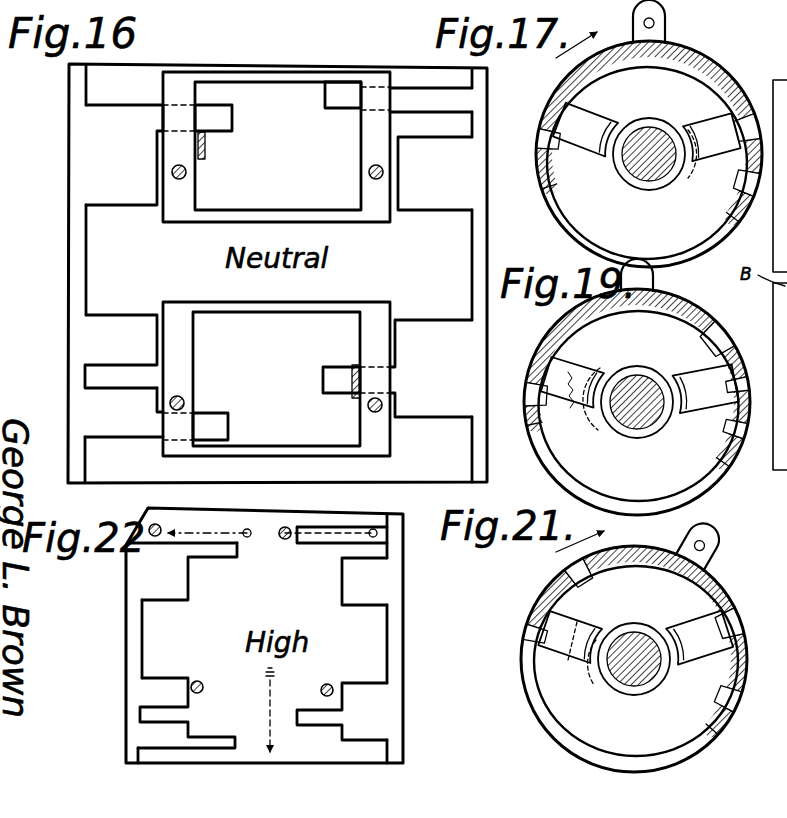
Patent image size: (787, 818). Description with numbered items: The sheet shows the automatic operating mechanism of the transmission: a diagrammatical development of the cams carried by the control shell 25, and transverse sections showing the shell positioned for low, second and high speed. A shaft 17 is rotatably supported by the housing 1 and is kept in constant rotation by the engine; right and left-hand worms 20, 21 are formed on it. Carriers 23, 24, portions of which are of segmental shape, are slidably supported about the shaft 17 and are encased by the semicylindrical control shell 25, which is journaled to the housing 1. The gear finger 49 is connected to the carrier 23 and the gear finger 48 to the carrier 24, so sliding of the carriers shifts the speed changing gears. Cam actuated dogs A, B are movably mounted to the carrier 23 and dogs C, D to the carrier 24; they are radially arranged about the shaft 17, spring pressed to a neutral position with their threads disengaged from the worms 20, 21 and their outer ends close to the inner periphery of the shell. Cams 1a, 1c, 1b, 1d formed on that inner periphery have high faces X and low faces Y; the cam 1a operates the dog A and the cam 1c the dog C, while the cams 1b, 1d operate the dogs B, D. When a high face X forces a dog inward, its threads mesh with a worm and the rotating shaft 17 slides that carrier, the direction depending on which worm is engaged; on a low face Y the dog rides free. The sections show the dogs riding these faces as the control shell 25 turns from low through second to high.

In FIG. 19, the housing 1 is at (620, 431).
In FIG. 16, the cam 1a is at (441, 309).
In FIG. 22, the cam 1a is at (370, 712).
In FIG. 17, the cam 1a is at (756, 110).
In FIG. 19, the cam 1a is at (544, 300).
In FIG. 21, the cam 1a is at (748, 641).
In FIG. 16, the cam 1b is at (117, 420).
In FIG. 22, the cam 1b is at (110, 694).
In FIG. 17, the cam 1b is at (735, 206).
In FIG. 19, the cam 1b is at (731, 456).
In FIG. 21, the cam 1b is at (727, 723).
In FIG. 16, the cam 1c is at (453, 183).
In FIG. 22, the cam 1c is at (378, 576).
In FIG. 17, the cam 1c is at (547, 178).
In FIG. 19, the cam 1c is at (531, 409).
In FIG. 21, the cam 1c is at (540, 625).
In FIG. 16, the cam 1d is at (113, 193).
In FIG. 22, the cam 1d is at (112, 576).
In FIG. 17, the cam 1d is at (541, 141).
In FIG. 21, the cam 1d is at (561, 596).
In FIG. 17, the shaft 17 is at (648, 178).
In FIG. 21, the shaft 17 is at (636, 650).
In FIG. 17, the right-hand worm 20 is at (668, 186).
In FIG. 21, the right-hand worm 20 is at (627, 689).
In FIG. 19, the left-hand worm 21 is at (647, 433).
In FIG. 16, the carrier 23 is at (193, 327).
In FIG. 16, the carrier 24 is at (372, 156).
In FIG. 16, the control shell 25 is at (482, 216).
In FIG. 22, the control shell 25 is at (400, 645).
In FIG. 17, the control shell 25 is at (712, 72).
In FIG. 19, the control shell 25 is at (713, 323).
In FIG. 21, the control shell 25 is at (648, 557).
In FIG. 16, the gear finger 48 is at (356, 378).
In FIG. 16, the gear finger 49 is at (206, 158).
In FIG. 16, the cam actuated dog A is at (380, 408).
In FIG. 22, the cam actuated dog A is at (327, 690).
In FIG. 17, the cam actuated dog A is at (676, 168).
In FIG. 19, the cam actuated dog A is at (698, 402).
In FIG. 21, the cam actuated dog A is at (693, 645).
In FIG. 16, the cam actuated dog B is at (186, 403).
In FIG. 22, the cam actuated dog B is at (197, 687).
In FIG. 17, the cam actuated dog B is at (690, 126).
In FIG. 19, the cam actuated dog B is at (659, 372).
In FIG. 16, the cam actuated dog C is at (370, 176).
In FIG. 22, the cam actuated dog C is at (286, 527).
In FIG. 17, the cam actuated dog C is at (594, 125).
In FIG. 19, the cam actuated dog C is at (583, 396).
In FIG. 21, the cam actuated dog C is at (607, 633).
In FIG. 16, the cam actuated dog D is at (214, 146).
In FIG. 22, the cam actuated dog D is at (165, 525).
In FIG. 19, the cam actuated dog D is at (568, 373).
In FIG. 21, the cam actuated dog D is at (580, 642).
In FIG. 16, the high face X is at (133, 162).
In FIG. 22, the high face X is at (173, 592).
In FIG. 16, the low face Y is at (163, 195).
In FIG. 22, the low face Y is at (199, 565).